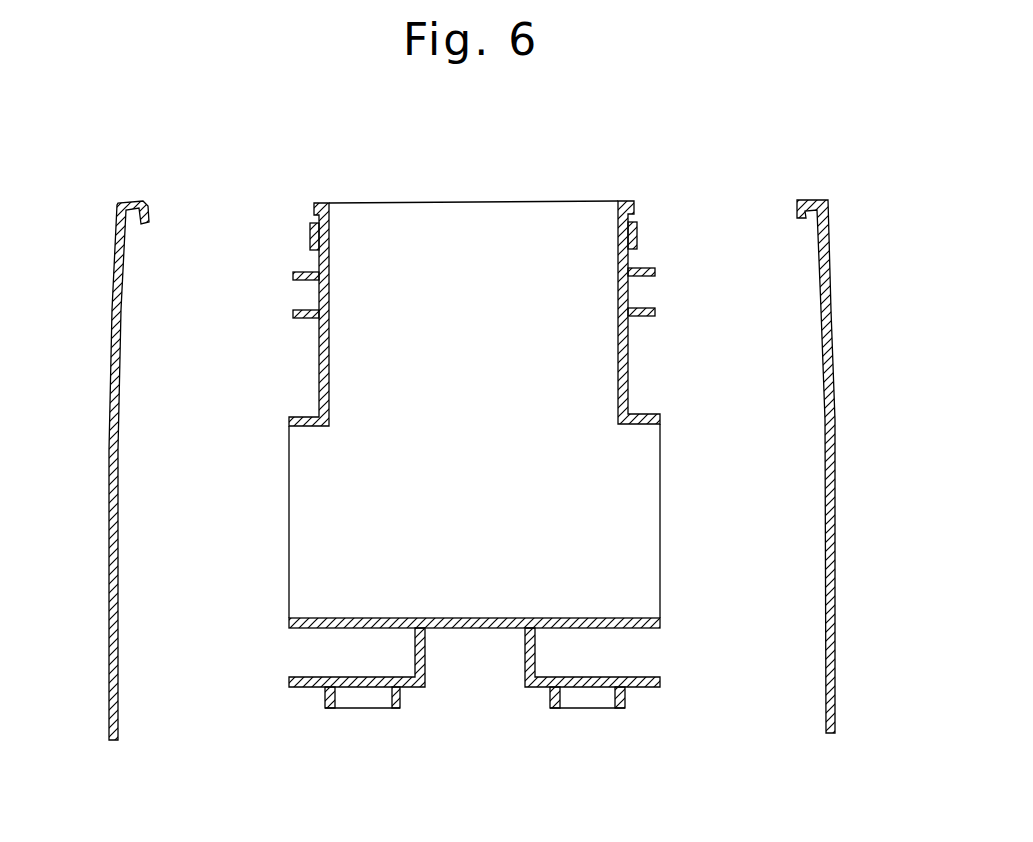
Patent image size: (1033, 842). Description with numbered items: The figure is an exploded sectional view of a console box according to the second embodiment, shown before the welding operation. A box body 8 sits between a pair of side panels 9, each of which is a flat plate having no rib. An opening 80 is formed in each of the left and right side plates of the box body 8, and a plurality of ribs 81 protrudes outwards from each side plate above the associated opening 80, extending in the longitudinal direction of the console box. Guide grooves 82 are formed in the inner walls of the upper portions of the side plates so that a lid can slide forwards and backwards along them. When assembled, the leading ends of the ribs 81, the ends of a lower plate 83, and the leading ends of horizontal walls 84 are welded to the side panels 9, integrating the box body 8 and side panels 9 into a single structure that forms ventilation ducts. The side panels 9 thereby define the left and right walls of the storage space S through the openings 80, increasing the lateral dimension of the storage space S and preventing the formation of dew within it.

The box body 8 is at (618, 348).
The side panels 9 is at (110, 450).
The opening 80 is at (290, 487).
The ribs 81 is at (302, 272).
The guide grooves 82 is at (320, 240).
The lower plate 83 is at (483, 618).
The horizontal walls 84 is at (318, 677).
The storage space S is at (498, 375).